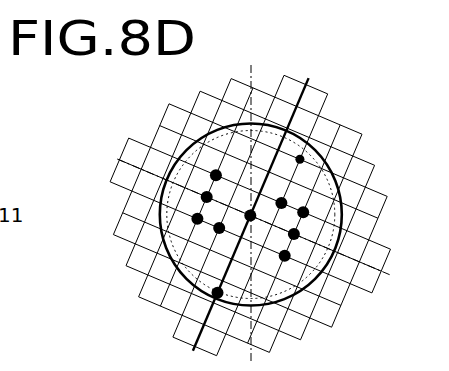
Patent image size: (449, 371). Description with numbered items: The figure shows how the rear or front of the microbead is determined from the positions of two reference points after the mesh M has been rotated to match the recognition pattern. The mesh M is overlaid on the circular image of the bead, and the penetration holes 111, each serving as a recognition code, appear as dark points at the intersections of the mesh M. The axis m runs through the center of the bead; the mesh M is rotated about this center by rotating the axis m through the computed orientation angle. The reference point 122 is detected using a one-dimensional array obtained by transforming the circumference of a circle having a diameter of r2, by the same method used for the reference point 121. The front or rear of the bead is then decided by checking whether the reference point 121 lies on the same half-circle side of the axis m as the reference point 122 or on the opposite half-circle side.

The penetration holes 111 is at (342, 212).
The reference point 121 is at (212, 296).
The reference point 122 is at (305, 158).
The diameter of circle r2 is at (234, 138).
The mesh M is at (316, 316).
The axis m is at (190, 350).